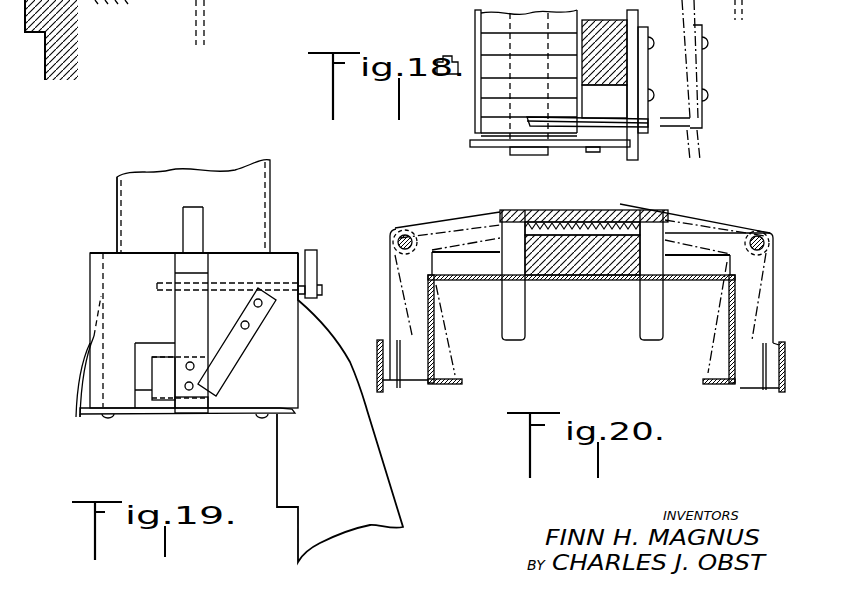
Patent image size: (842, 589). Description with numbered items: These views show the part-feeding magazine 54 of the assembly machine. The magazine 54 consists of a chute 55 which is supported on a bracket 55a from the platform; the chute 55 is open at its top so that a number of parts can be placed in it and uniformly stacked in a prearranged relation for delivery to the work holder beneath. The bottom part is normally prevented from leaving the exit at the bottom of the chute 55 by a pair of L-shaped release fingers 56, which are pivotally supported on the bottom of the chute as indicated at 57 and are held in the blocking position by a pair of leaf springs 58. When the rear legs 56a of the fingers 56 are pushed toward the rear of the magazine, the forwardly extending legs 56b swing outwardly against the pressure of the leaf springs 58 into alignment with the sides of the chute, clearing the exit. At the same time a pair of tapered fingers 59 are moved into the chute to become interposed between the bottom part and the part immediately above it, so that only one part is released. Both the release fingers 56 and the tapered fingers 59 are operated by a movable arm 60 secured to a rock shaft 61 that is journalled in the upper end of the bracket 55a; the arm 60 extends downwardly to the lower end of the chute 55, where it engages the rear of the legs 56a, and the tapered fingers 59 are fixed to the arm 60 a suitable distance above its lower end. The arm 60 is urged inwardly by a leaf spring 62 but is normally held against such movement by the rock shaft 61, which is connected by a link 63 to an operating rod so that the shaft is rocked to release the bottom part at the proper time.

In FIG. 18, the magazine 54 is at (486, 40).
In FIG. 19, the magazine 54 is at (275, 207).
In FIG. 20, the magazine 54 is at (538, 280).
In FIG. 19, the chute 55 is at (122, 217).
In FIG. 20, the chute 55 is at (472, 282).
In FIG. 19, the bracket 55a is at (375, 498).
In FIG. 19, the L-shaped release fingers 56 is at (82, 420).
In FIG. 20, the L-shaped release fingers 56 is at (392, 302).
In FIG. 19, the rear legs 56a is at (148, 418).
In FIG. 20, the rear legs 56a is at (478, 198).
In FIG. 18, the forwardly extending legs 56b is at (474, 143).
In FIG. 20, the forwardly extending legs 56b is at (452, 360).
In FIG. 18, the pivot 57 is at (596, 150).
In FIG. 19, the pivot 57 is at (108, 416).
In FIG. 20, the pivot 57 is at (404, 232).
In FIG. 19, the leaf springs 58 is at (78, 388).
In FIG. 20, the leaf springs 58 is at (385, 398).
In FIG. 18, the tapered fingers 59 is at (575, 130).
In FIG. 20, the tapered fingers 59 is at (525, 328).
In FIG. 18, the movable arm 60 is at (638, 14).
In FIG. 19, the movable arm 60 is at (180, 305).
In FIG. 20, the movable arm 60 is at (562, 213).
In FIG. 19, the rock shaft 61 is at (322, 290).
In FIG. 19, the leaf spring 62 is at (252, 320).
In FIG. 19, the link 63 is at (322, 238).